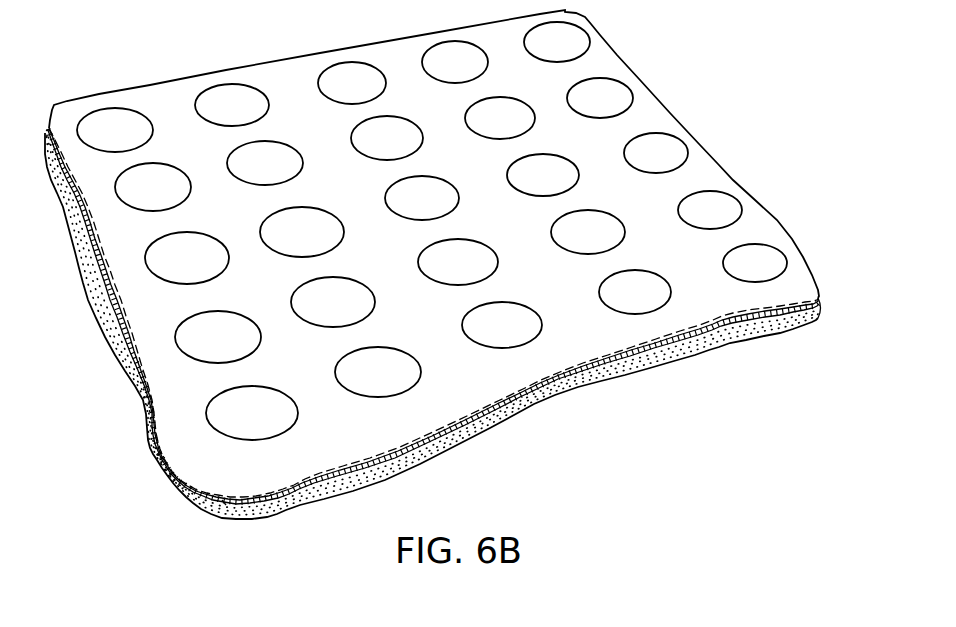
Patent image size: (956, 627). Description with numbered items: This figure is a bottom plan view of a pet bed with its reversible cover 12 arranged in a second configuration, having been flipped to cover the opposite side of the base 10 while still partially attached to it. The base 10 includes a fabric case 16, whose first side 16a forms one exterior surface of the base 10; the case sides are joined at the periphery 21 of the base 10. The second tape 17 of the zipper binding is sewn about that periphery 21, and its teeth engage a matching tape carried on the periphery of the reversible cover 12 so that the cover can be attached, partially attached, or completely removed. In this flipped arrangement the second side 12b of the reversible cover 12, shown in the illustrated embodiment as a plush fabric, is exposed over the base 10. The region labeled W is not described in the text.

The absorbent article 10 is at (583, 343).
The absorbent layer 12 is at (503, 413).
The bottom surface of absorbent layer 12b is at (280, 515).
The top layer 16 is at (180, 423).
The top surface of top layer 16a is at (177, 383).
The side edge 17 is at (112, 275).
The edge of top layer 21 is at (227, 503).
The openings W is at (691, 177).